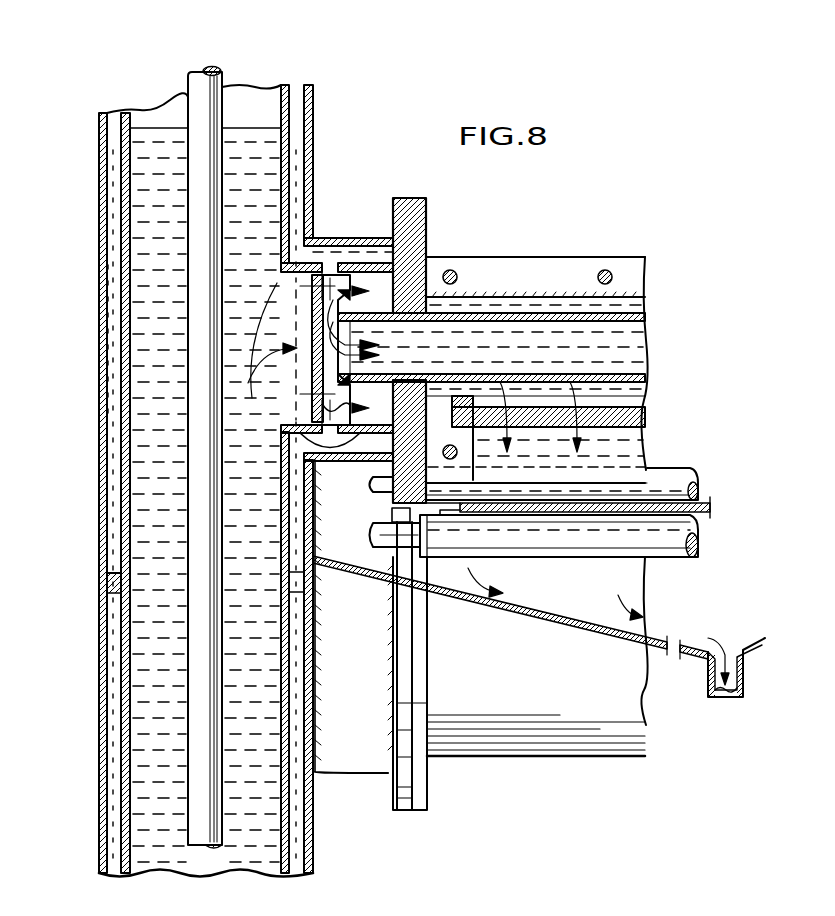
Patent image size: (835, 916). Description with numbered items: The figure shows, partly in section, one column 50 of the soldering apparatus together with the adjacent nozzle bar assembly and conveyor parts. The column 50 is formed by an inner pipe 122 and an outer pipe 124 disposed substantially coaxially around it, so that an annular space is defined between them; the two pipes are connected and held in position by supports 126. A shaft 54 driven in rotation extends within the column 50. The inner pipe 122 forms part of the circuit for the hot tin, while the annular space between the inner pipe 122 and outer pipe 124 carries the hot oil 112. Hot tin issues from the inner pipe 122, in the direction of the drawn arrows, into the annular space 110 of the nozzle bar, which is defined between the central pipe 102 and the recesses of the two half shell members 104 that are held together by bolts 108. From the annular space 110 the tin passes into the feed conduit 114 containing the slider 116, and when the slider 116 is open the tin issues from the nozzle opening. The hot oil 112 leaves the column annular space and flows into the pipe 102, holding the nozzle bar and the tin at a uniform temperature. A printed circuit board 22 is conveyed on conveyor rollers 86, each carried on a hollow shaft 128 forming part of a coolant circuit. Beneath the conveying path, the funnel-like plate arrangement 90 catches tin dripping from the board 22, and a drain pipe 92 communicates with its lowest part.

The printed circuit board 22 is at (709, 525).
The column 50 is at (88, 434).
The shaft 54 is at (221, 73).
The conveyor roller 86 is at (690, 469).
The plate arrangement 90 is at (560, 628).
The drain pipe 92 is at (743, 698).
The pipe 102 is at (647, 318).
The half shell member 104 is at (527, 265).
The bolt 108 is at (452, 268).
The annular space 110 is at (647, 300).
The hot oil 112 is at (298, 860).
The feed conduit 114 is at (647, 401).
The slider 116 is at (647, 422).
The inner pipe 122 is at (290, 117).
The outer pipe 124 is at (312, 150).
The support 126 is at (107, 600).
The hollow shaft 128 is at (373, 484).